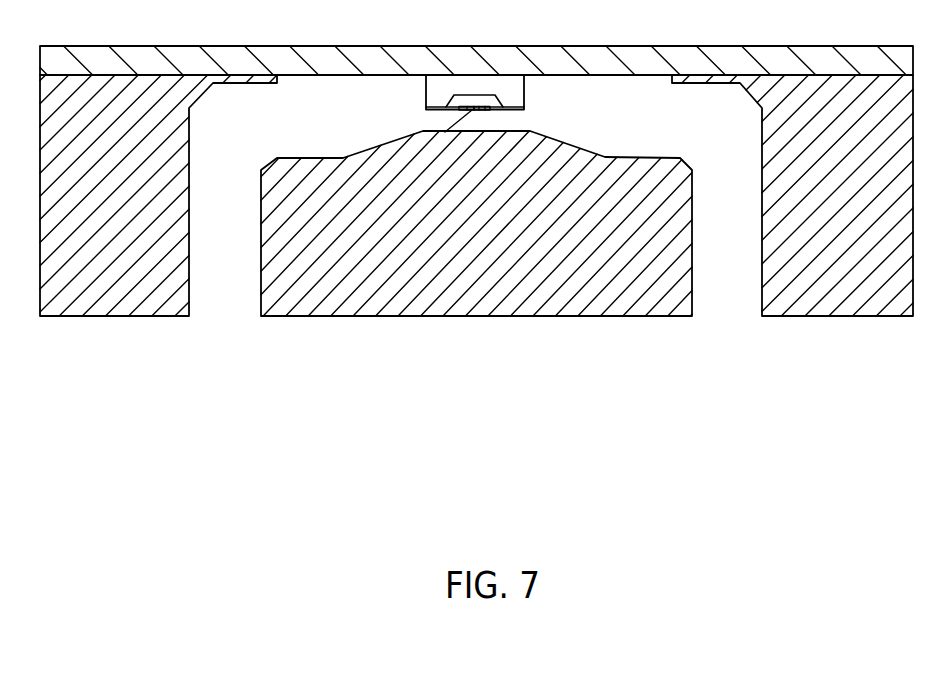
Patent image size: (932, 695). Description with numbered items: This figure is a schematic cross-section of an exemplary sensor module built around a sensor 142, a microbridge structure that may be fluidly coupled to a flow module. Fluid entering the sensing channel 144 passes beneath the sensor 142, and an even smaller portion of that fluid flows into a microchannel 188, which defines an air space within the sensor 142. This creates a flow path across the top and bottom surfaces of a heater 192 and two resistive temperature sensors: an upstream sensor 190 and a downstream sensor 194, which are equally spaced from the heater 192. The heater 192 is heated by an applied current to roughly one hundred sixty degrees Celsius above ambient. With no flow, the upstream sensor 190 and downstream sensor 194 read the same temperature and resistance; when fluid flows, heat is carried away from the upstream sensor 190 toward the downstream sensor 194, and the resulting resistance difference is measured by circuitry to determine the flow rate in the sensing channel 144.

The sensor 142 is at (524, 90).
The sensing channel 144 is at (274, 126).
The microchannel 188 is at (475, 98).
The upstream sensor 190 is at (462, 110).
The heater 192 is at (422, 131).
The downstream sensor 194 is at (487, 110).